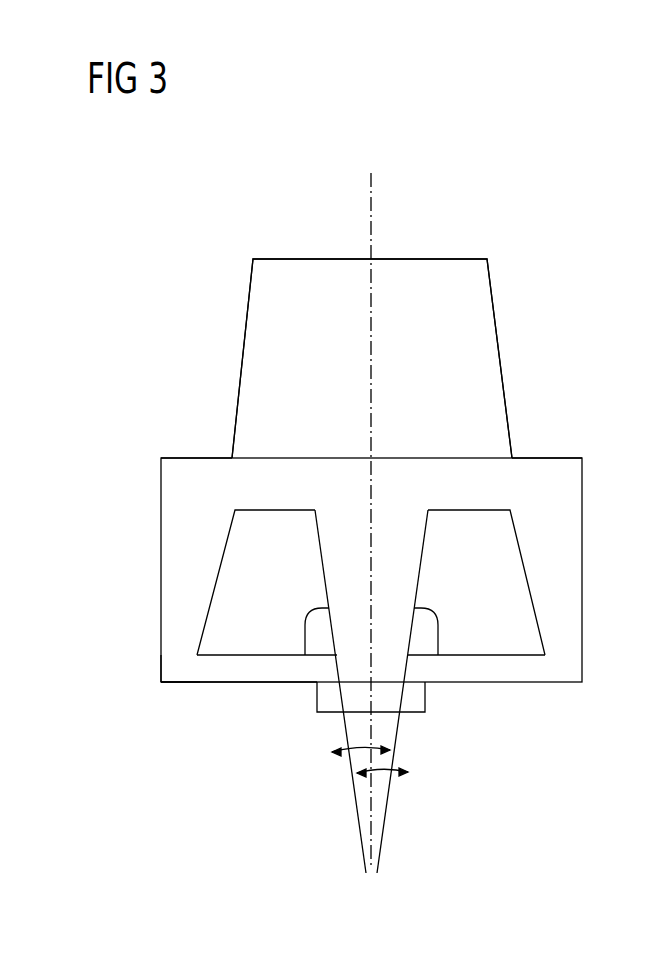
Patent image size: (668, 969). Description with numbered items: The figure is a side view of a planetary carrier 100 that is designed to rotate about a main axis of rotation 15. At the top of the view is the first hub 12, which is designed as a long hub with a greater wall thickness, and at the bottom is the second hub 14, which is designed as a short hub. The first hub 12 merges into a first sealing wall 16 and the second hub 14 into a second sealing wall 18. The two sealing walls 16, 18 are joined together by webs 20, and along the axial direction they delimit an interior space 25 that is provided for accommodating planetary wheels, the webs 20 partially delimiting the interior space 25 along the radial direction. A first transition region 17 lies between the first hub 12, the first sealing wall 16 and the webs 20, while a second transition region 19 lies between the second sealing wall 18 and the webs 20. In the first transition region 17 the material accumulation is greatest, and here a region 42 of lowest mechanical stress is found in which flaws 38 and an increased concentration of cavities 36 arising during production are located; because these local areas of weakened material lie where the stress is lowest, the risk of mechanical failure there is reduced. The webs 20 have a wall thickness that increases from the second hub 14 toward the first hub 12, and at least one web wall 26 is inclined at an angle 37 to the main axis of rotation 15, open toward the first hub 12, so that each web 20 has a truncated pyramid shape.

The planetary carrier 100 is at (195, 251).
The main axis of rotation 15 is at (372, 220).
The first hub 12 is at (247, 315).
The first transition region 17 is at (220, 480).
The first sealing wall 16 is at (523, 483).
The cavities 36 is at (365, 532).
The flaws 38 is at (365, 532).
The region of lowest mechanical stress 42 is at (171, 457).
The webs 20 is at (161, 593).
The second transition region 19 is at (176, 670).
The second sealing wall 18 is at (213, 672).
The interior space 25 is at (250, 648).
The web wall 26 is at (305, 655).
The second hub 14 is at (415, 714).
The angle 37 is at (360, 756).